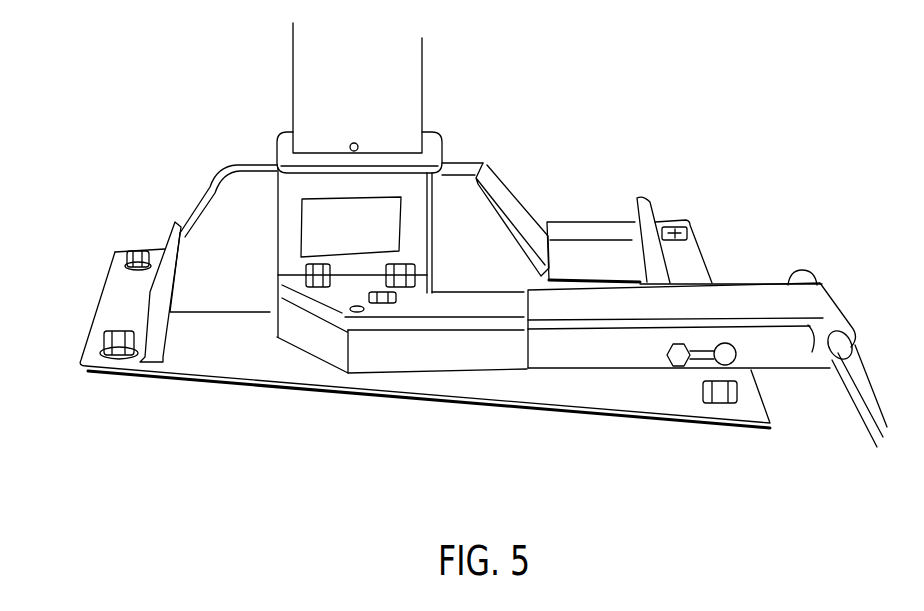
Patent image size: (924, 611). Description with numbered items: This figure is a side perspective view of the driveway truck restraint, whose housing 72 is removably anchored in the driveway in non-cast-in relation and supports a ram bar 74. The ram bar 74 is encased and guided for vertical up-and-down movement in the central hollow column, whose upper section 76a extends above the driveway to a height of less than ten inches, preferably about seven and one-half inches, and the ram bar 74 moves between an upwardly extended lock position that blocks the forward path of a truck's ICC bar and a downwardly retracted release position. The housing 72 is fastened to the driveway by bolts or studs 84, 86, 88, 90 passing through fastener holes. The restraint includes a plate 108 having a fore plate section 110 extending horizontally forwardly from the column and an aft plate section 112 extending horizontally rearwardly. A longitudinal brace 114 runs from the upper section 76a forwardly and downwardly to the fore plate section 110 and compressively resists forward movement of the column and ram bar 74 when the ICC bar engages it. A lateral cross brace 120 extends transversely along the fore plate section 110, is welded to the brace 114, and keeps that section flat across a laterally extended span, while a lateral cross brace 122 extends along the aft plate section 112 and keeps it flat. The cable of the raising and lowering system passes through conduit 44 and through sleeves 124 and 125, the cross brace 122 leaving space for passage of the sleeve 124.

The conduit 44 is at (867, 377).
The housing 72 is at (277, 155).
The ram bar 74 is at (310, 72).
The upper section of central hollow column 76a is at (285, 217).
The bolt 84 is at (135, 250).
The bolt 86 is at (103, 357).
The bolt 88 is at (738, 390).
The bolt 90 is at (689, 230).
The plate 108 is at (312, 390).
The fore plate section 110 is at (112, 317).
The aft plate section 112 is at (697, 272).
The brace 114 is at (195, 208).
The lateral cross brace 120 is at (153, 281).
The lateral cross brace 122 is at (647, 200).
The sleeve 124 is at (605, 352).
The sleeve 125 is at (431, 350).